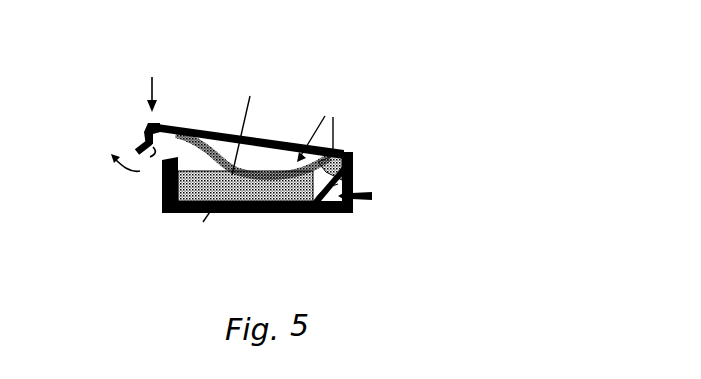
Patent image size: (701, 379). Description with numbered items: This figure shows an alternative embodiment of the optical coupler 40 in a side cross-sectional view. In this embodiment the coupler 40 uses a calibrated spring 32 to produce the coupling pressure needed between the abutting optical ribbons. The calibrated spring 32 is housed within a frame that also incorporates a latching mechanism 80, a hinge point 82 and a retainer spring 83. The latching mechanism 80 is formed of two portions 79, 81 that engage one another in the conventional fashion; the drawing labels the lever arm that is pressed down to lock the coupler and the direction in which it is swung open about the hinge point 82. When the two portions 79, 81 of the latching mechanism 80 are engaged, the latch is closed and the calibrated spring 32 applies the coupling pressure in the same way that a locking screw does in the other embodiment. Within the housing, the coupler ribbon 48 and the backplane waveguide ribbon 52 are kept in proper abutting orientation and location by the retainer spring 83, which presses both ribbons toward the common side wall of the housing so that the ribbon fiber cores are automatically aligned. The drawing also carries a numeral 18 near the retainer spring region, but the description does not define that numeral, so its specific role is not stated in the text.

The optical coupler 40 is at (332, 154).
The coupler ribbon 48 is at (269, 212).
The backplane waveguide ribbon 52 is at (259, 203).
The portion of latching mechanism 81 is at (158, 168).
The retainer spring 83 is at (350, 167).
The AWEC coupler ribbon connector 18 is at (353, 180).
The hinge point 82 is at (350, 153).
The calibrated spring 32 is at (361, 131).
The latching mechanism 80 is at (133, 135).
The portion of latching mechanism 79 is at (144, 158).